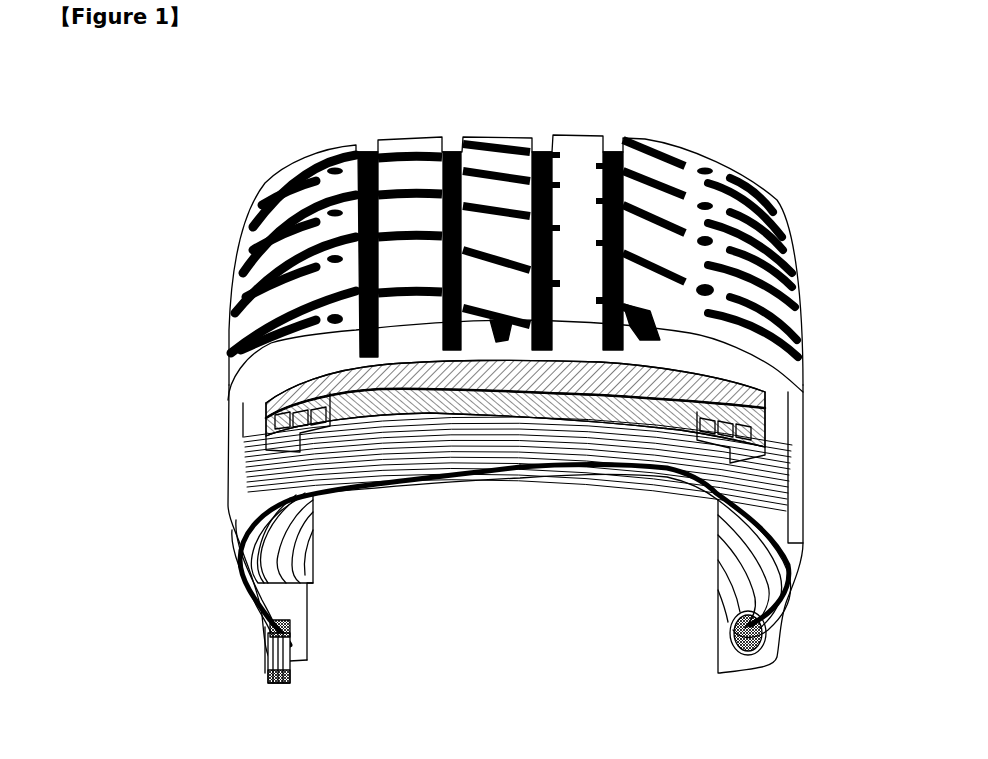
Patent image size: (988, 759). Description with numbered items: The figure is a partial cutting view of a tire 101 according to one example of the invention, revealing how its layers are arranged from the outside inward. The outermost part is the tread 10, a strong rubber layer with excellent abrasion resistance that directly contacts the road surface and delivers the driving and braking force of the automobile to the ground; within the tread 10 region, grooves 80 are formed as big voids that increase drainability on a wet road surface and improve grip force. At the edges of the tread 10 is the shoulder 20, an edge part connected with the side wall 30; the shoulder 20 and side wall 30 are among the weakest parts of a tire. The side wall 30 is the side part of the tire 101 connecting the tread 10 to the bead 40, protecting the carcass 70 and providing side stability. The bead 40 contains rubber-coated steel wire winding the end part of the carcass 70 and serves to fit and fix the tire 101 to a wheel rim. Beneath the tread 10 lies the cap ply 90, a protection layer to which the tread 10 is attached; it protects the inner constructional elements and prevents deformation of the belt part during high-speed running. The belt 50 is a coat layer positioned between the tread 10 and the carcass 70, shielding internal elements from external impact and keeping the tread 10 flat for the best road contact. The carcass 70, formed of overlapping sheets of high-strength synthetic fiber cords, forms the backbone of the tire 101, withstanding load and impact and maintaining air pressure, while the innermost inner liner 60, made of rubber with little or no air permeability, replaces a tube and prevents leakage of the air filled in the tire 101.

The tire 101 is at (274, 112).
The tread 10 is at (414, 178).
The shoulder 20 is at (752, 215).
The side wall 30 is at (800, 502).
The bead 40 is at (267, 664).
The belt 50 is at (565, 408).
The inner liner 60 is at (300, 520).
The carcass 70 is at (237, 470).
The groove 80 is at (455, 345).
The cap ply 90 is at (650, 385).